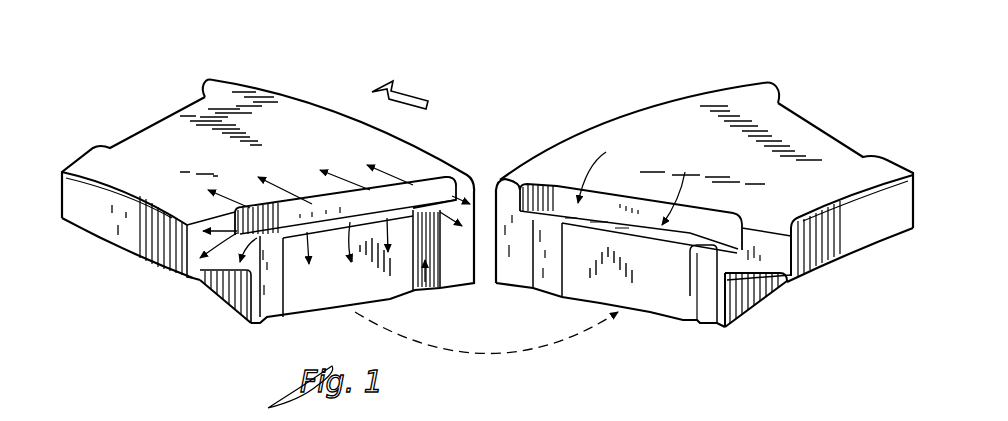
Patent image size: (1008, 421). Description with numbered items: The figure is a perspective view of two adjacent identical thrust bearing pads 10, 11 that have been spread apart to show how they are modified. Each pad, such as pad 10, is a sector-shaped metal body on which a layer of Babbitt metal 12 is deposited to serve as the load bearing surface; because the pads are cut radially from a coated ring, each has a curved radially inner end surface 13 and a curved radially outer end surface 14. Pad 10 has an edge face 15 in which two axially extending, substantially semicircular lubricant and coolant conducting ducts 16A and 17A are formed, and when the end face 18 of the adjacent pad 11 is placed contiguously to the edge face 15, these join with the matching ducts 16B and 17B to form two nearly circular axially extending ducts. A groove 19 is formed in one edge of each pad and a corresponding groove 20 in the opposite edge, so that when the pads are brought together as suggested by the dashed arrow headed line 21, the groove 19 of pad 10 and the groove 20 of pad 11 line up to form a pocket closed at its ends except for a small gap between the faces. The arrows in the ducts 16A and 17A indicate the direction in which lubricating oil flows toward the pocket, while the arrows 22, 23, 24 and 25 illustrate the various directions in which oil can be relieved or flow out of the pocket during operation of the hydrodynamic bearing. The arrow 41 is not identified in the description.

The thrust bearing pad 10 is at (305, 98).
The thrust bearing pad 11 is at (634, 110).
The Babbitt metal 12 is at (137, 193).
The radially inner end surface 13 is at (120, 222).
The radially outer end surface 14 is at (285, 91).
The edge face 15 is at (298, 312).
The lubricant and coolant conducting duct 16A is at (260, 323).
The lubricant and coolant conducting duct 16B is at (707, 312).
The lubricant and coolant conducting duct 17A is at (433, 289).
The lubricant and coolant conducting duct 17B is at (547, 290).
The end face 18 is at (653, 302).
The groove 19 is at (461, 176).
The groove 20 is at (195, 96).
The dashed arrow headed line 21 is at (505, 352).
The arrow 22 is at (279, 184).
The arrow 23 is at (200, 280).
The arrow 24 is at (352, 252).
The arrow 25 is at (631, 178).
The direction arrow 41 is at (418, 105).